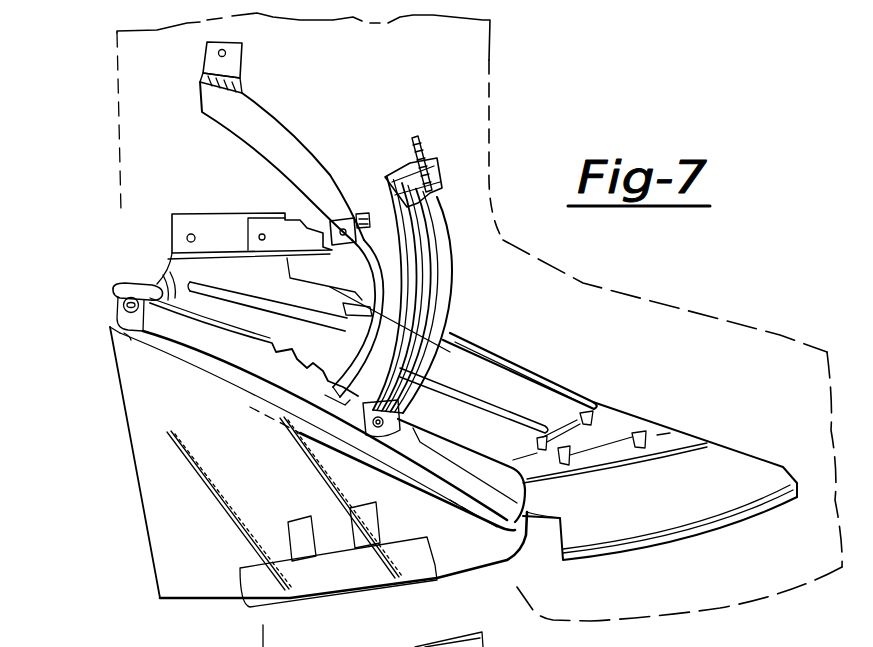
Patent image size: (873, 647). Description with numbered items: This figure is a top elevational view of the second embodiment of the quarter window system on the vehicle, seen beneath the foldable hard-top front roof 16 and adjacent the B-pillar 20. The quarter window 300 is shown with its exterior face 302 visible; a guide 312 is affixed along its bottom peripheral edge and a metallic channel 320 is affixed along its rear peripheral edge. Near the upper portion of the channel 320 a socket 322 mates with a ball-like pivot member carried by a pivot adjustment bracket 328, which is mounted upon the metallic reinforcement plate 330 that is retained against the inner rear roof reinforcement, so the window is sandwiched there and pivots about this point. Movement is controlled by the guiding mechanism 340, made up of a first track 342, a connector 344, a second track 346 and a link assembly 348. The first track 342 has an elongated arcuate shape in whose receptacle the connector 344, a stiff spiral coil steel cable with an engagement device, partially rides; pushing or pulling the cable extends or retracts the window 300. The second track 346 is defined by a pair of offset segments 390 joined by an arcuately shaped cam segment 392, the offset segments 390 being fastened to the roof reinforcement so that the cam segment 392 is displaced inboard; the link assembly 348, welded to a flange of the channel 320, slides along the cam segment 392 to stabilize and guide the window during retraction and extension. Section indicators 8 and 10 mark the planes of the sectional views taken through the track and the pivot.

The B-pillar 20 is at (632, 343).
The quarter window 300 is at (163, 487).
The exterior face 302 is at (265, 470).
The guide 312 is at (283, 560).
The metallic channel 320 is at (493, 523).
The reinforcement plate 330 is at (520, 407).
The socket 322 is at (112, 283).
The pivot adjustment bracket 328 is at (153, 282).
The offset segments 390 is at (228, 68).
The cam segment 392 is at (243, 118).
The second track 346 is at (273, 142).
The link assembly 348 is at (356, 206).
The connector 344 is at (413, 140).
The first track 342 is at (408, 185).
The guiding mechanism 340 is at (454, 309).
The section line 8 is at (250, 173).
The section line 10 is at (90, 295).
The foldable hard-top front roof 16 is at (348, 646).